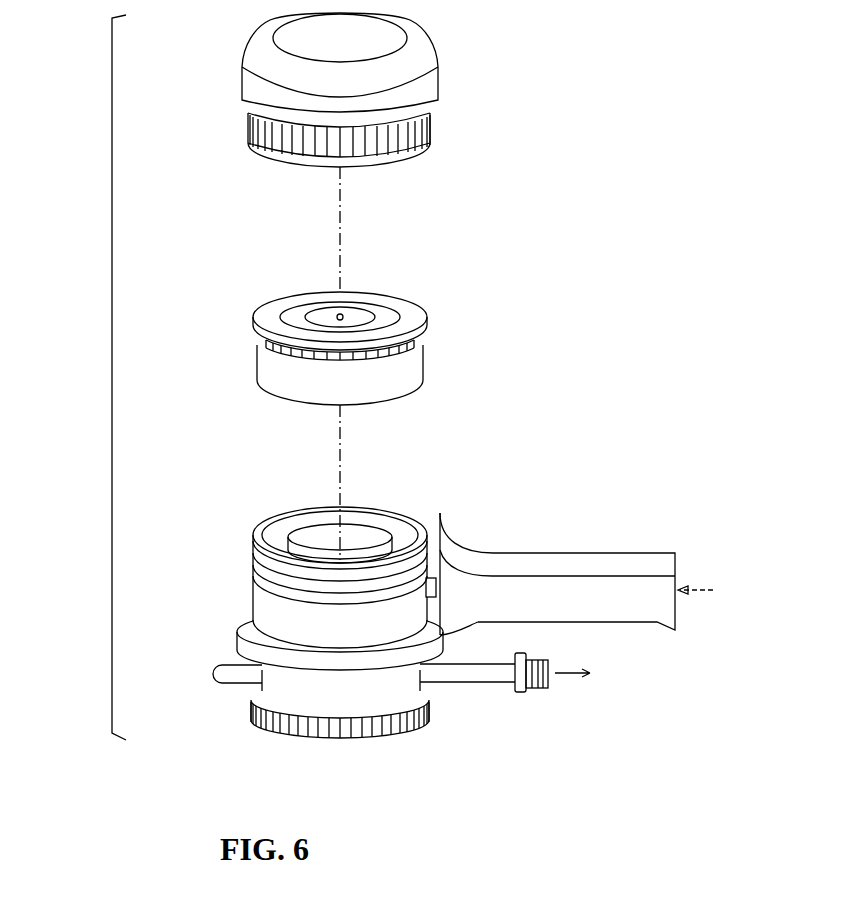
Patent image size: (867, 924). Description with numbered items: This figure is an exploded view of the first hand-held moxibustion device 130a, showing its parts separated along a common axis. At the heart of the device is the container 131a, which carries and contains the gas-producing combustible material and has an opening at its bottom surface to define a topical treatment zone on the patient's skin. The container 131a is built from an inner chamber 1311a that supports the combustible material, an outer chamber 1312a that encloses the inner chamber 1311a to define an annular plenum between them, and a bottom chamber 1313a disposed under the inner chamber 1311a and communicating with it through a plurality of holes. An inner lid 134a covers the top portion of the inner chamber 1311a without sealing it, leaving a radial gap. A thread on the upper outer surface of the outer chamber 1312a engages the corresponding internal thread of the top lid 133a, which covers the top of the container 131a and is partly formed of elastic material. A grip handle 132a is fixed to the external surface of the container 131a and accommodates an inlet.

The first hand-held moxibustion device 130a is at (110, 247).
The top lid 133a is at (445, 87).
The inner lid 134a is at (422, 370).
The container 131a is at (440, 589).
The inner chamber 1311a is at (287, 538).
The outer chamber 1312a is at (258, 597).
The bottom chamber 1313a is at (275, 690).
The grip handle 132a is at (588, 562).